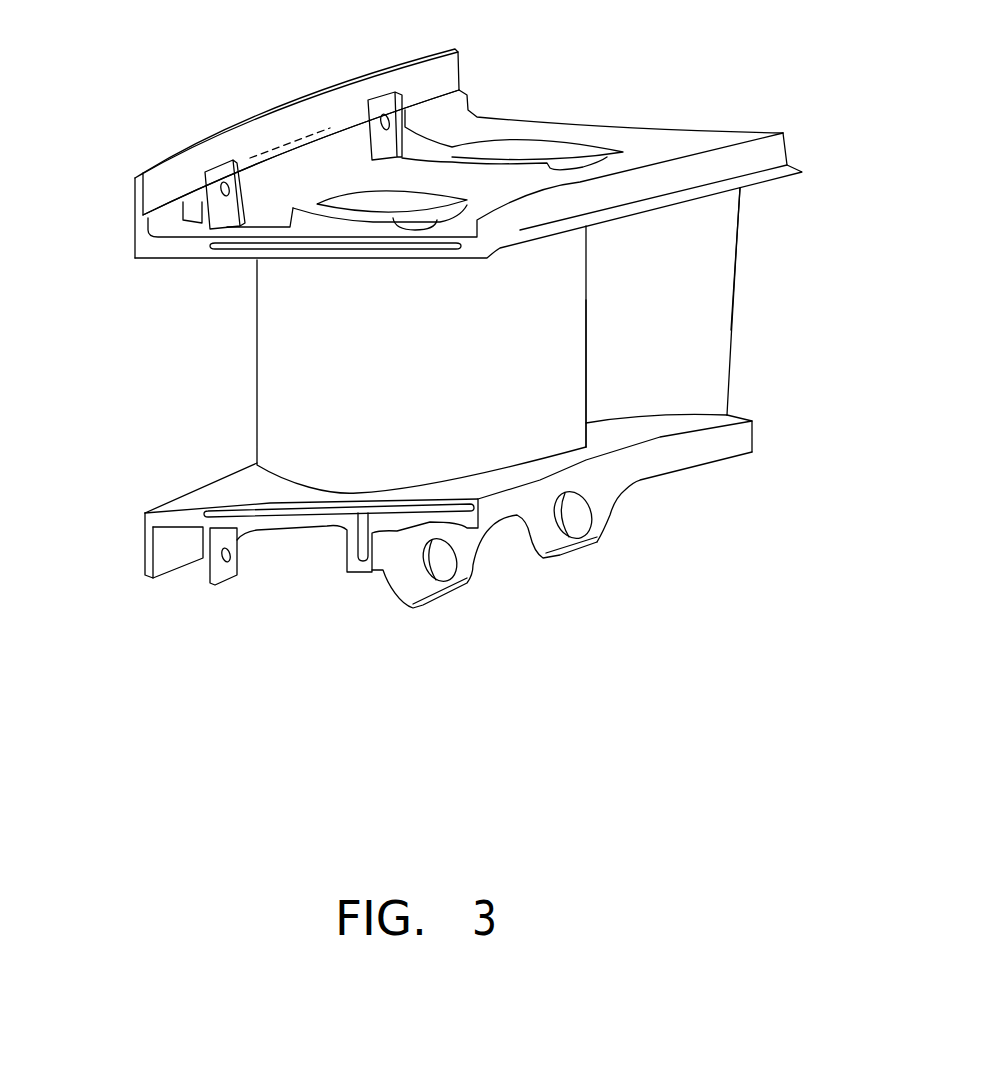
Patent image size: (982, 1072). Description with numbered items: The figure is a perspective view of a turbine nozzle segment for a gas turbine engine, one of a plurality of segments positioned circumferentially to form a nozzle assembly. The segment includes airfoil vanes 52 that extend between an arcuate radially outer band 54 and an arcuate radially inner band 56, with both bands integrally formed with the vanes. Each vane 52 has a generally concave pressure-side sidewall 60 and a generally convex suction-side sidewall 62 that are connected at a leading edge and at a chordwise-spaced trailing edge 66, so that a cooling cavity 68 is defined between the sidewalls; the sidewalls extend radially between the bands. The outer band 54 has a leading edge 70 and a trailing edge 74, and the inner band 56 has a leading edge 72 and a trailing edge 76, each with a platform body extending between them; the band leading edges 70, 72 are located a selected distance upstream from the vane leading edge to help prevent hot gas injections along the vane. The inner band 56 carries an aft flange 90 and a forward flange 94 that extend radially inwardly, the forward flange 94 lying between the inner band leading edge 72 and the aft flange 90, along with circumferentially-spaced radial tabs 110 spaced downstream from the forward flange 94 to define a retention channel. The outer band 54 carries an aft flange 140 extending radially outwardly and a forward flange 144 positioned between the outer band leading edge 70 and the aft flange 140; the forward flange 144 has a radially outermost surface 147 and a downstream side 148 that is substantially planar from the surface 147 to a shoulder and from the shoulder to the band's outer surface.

The airfoil vane 52 is at (420, 356).
The outer band 54 is at (787, 142).
The inner band 56 is at (740, 435).
The pressure-side sidewall 60 is at (740, 223).
The suction-side sidewall 62 is at (698, 332).
The trailing edge 66 is at (587, 327).
The cooling cavity 68 is at (540, 143).
The outer band leading edge 70 is at (135, 220).
The inner band leading edge 72 is at (144, 543).
The outer band trailing edge 74 is at (690, 190).
The inner band trailing edge 76 is at (620, 463).
The aft flange 90 is at (418, 590).
The forward flange 94 is at (161, 565).
The radial tab 110 is at (233, 547).
The aft flange 140 is at (658, 158).
The forward flange 144 is at (252, 123).
The radially outermost surface 147 is at (432, 56).
The downstream side 148 is at (157, 188).